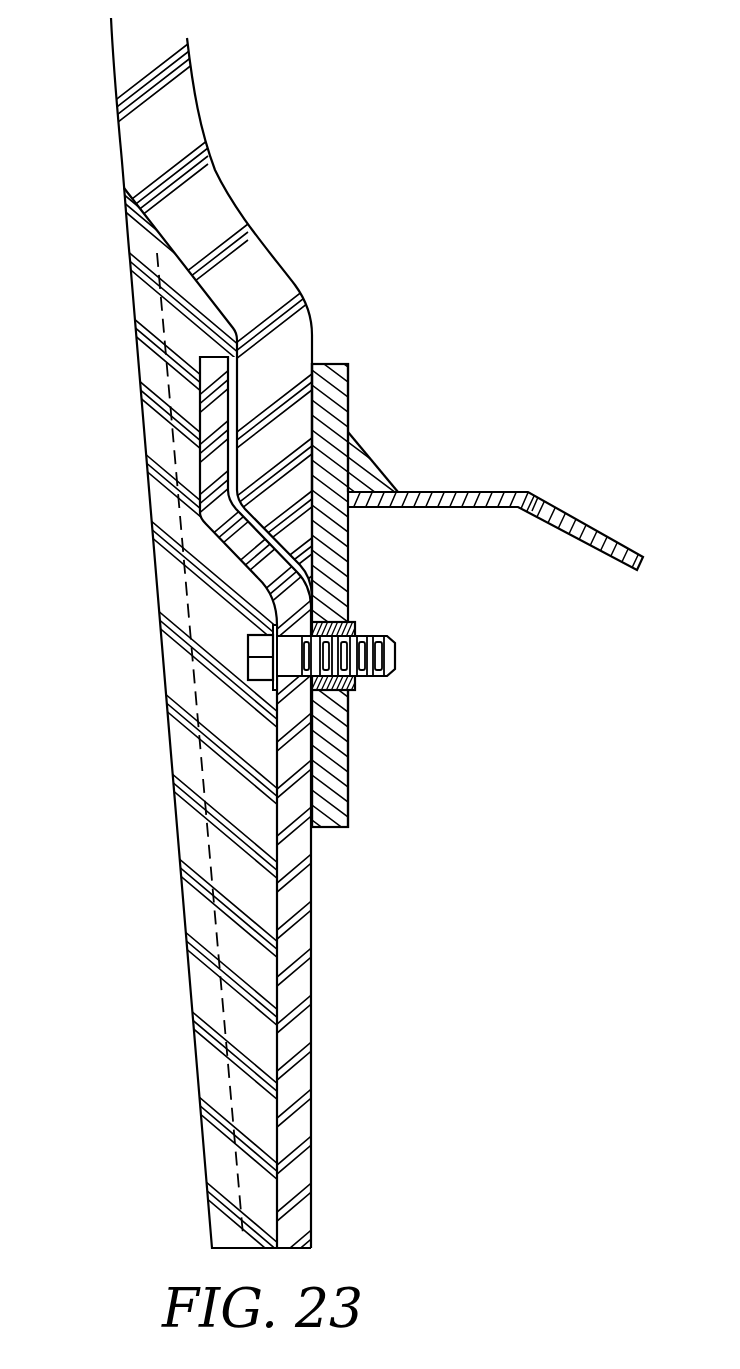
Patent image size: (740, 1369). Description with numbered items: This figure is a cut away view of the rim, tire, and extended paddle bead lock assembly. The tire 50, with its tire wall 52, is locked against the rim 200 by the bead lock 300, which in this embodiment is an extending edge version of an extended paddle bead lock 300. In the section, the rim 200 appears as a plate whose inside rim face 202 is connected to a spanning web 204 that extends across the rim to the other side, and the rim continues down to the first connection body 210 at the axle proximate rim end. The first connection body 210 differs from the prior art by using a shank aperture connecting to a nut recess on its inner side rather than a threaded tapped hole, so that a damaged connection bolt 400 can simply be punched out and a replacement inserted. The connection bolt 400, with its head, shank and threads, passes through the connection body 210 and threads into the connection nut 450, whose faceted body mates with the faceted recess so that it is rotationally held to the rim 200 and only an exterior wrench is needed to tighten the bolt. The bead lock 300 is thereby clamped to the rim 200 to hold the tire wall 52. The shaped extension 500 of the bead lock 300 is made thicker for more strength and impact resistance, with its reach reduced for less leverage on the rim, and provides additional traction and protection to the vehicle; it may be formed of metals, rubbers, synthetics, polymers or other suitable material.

The tire 50 is at (195, 63).
The tire wall 52 is at (203, 128).
The rim 200 is at (348, 585).
The inside rim face 202 is at (348, 407).
The spanning web 204 is at (455, 491).
The first connection body 210 is at (349, 744).
The bead lock 300 is at (311, 917).
The connection bolt 400 is at (396, 650).
The connection nut 450 is at (355, 685).
The shaped extension 500 is at (172, 787).